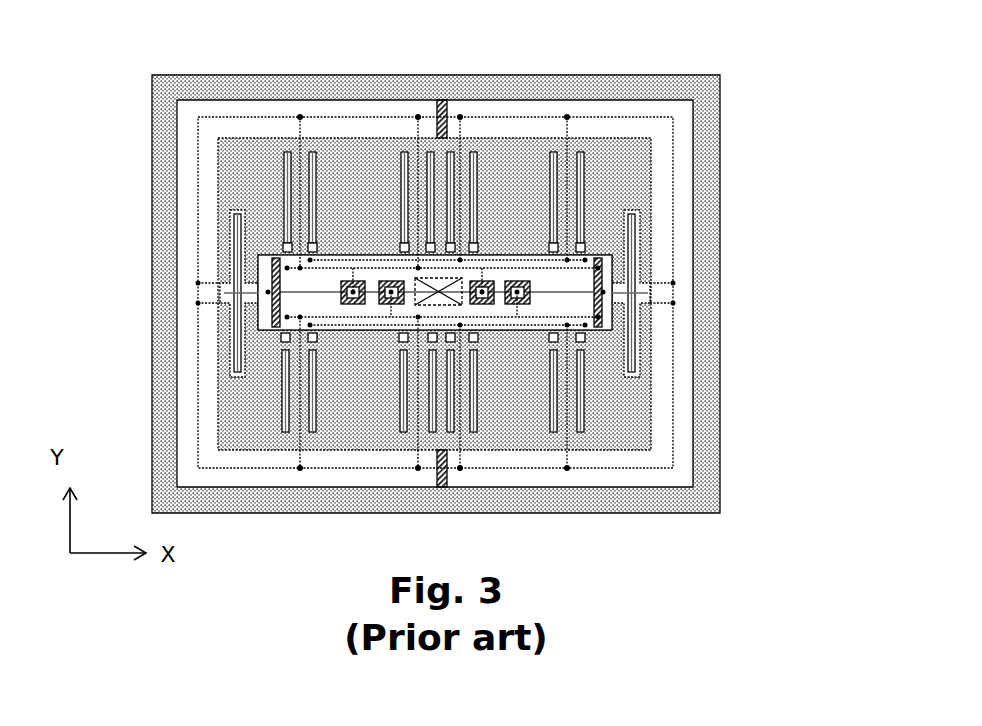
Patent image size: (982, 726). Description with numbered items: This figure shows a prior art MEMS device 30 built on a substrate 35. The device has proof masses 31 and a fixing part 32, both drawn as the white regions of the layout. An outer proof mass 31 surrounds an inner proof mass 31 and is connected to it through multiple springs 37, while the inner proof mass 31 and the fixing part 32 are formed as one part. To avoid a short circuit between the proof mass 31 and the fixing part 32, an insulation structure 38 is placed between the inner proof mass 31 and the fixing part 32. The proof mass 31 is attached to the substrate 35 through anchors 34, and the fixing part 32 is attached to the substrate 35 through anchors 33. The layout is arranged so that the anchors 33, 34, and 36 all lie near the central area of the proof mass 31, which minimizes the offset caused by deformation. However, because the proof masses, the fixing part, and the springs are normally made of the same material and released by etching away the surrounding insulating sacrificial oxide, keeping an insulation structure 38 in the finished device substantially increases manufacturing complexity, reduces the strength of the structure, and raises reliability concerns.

The prior art MEMS device 30 is at (124, 41).
The proof mass 31 is at (680, 160).
The fixing part 32 is at (577, 307).
The anchor 33 is at (440, 290).
The anchor 34 is at (353, 290).
The substrate 35 is at (705, 292).
The anchor 36 is at (391, 290).
The spring 37 is at (630, 254).
The insulation structure 38 is at (598, 275).